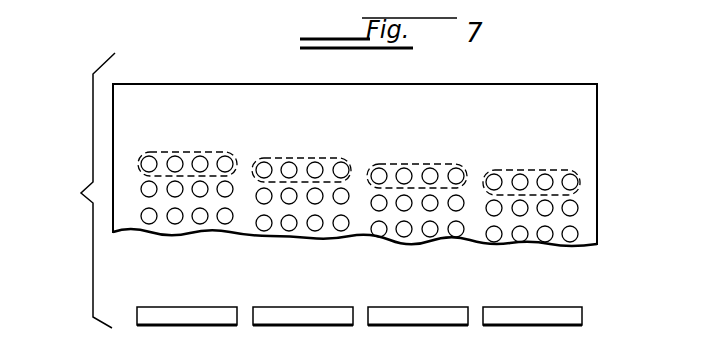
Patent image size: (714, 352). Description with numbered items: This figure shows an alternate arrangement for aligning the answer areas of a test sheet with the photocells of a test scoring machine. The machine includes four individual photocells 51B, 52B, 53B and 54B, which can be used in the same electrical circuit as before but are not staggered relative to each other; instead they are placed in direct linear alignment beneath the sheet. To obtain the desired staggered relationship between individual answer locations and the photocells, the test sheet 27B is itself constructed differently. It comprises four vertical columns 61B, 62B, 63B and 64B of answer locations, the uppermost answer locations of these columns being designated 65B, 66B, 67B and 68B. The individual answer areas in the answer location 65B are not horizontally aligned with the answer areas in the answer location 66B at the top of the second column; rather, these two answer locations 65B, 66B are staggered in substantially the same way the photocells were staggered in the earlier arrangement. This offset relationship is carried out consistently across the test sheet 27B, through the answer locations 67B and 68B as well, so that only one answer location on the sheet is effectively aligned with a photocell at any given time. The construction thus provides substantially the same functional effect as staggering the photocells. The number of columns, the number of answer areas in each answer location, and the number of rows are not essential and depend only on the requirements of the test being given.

The test sheet 27B is at (585, 119).
The first vertical column of answer locations 61B is at (184, 142).
The second vertical column of answer locations 62B is at (312, 152).
The third vertical column of answer locations 63B is at (437, 145).
The fourth vertical column of answer locations 64B is at (562, 123).
The uppermost answer location 65B is at (215, 152).
The uppermost answer location 66B is at (338, 156).
The uppermost answer location 67B is at (438, 163).
The uppermost answer location 68B is at (533, 168).
The photocell 51B is at (213, 312).
The photocell 52B is at (330, 312).
The photocell 53B is at (443, 312).
The photocell 54B is at (558, 312).